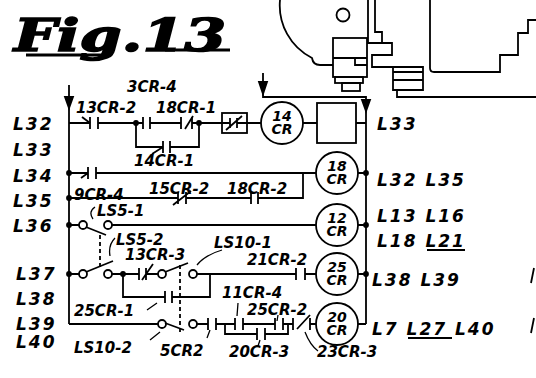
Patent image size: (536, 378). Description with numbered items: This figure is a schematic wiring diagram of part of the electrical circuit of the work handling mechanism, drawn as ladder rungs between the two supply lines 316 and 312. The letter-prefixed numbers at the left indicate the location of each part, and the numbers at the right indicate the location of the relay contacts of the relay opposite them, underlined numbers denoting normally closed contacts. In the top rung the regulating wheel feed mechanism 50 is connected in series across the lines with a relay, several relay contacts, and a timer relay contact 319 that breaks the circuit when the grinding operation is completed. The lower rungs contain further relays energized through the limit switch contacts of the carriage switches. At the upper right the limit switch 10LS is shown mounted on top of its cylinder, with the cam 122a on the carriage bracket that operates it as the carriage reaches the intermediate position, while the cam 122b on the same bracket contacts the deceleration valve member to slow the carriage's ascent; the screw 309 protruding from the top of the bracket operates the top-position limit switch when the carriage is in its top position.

The line 316 is at (67, 94).
The line 312 is at (383, 148).
The timer relay contact 319 is at (233, 113).
The regulating wheel feed mechanism 50 is at (351, 137).
The cam 122a is at (333, 68).
The cam 122b is at (333, 47).
The screw 309 is at (329, 11).
The limit switch 10LS is at (488, 34).